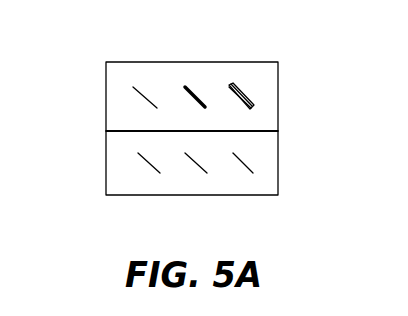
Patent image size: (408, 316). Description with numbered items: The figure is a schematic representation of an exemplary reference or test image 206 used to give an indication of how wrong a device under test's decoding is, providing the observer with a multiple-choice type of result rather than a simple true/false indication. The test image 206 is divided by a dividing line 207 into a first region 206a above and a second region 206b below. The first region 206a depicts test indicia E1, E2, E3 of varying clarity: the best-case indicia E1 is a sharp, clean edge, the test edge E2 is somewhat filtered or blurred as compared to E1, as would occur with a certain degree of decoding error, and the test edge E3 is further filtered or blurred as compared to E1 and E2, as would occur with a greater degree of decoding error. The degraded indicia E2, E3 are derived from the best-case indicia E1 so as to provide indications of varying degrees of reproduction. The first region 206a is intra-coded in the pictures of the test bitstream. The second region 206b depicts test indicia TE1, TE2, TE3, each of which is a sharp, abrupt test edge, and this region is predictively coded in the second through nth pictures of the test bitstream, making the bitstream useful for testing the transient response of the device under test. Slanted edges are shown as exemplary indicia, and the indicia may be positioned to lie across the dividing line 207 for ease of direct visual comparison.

The test image 206 is at (181, 130).
The first region 206a is at (111, 107).
The second region 206b is at (111, 165).
The dividing line 207 is at (253, 131).
The best-case test indicia E1 is at (144, 96).
The test edge E2 is at (196, 93).
The test edge E3 is at (243, 95).
The test indicia TE1 is at (149, 167).
The test indicia TE2 is at (198, 167).
The test indicia TE3 is at (245, 167).